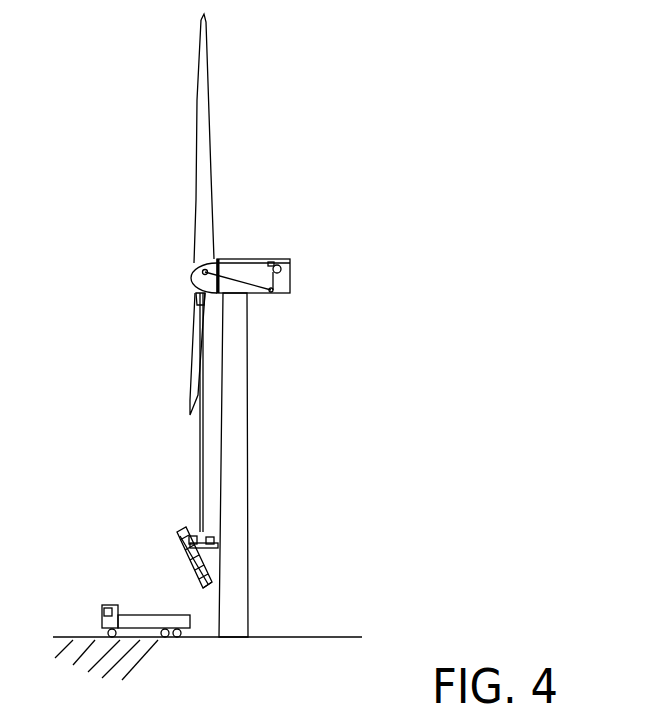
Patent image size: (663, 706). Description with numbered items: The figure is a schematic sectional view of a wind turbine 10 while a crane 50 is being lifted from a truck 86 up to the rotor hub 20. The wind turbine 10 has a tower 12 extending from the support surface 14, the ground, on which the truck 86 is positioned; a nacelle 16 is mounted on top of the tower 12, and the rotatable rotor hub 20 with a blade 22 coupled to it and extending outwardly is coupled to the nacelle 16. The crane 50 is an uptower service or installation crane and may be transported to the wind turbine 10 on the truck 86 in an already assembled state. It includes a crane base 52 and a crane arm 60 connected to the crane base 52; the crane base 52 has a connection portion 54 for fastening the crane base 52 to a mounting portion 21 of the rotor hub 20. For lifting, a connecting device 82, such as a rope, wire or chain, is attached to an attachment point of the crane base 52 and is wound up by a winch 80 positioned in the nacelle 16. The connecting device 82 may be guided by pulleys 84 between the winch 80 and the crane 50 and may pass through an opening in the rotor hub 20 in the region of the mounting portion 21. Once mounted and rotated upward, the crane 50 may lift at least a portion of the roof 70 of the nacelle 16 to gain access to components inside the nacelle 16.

The wind turbine 10 is at (257, 325).
The tower 12 is at (247, 428).
The support surface 14 is at (342, 635).
The nacelle 16 is at (291, 292).
The rotor hub 20 is at (195, 290).
The mounting portion 21 is at (197, 297).
The blade 22 is at (197, 110).
The crane 50 is at (198, 544).
The crane base 52 is at (218, 547).
The connection portion 54 is at (193, 535).
The crane arm 60 is at (212, 592).
The roof 70 is at (231, 271).
The winch 80 is at (291, 270).
The connecting device 82 is at (200, 450).
The pulleys 84 is at (195, 268).
The truck 86 is at (135, 615).